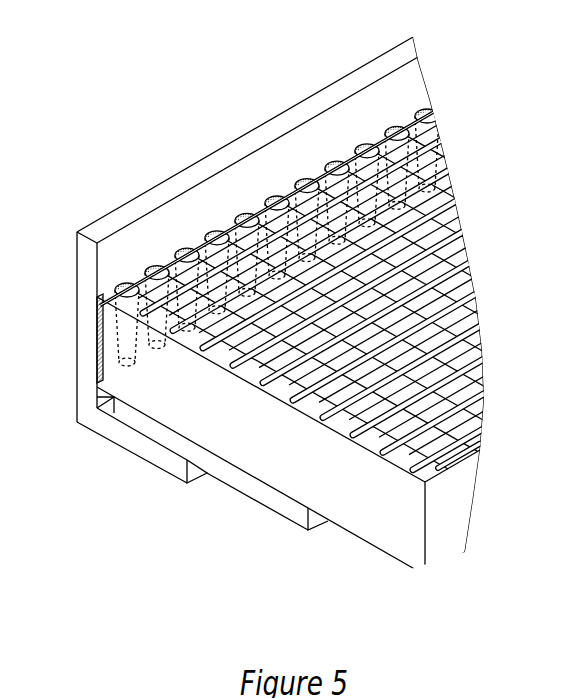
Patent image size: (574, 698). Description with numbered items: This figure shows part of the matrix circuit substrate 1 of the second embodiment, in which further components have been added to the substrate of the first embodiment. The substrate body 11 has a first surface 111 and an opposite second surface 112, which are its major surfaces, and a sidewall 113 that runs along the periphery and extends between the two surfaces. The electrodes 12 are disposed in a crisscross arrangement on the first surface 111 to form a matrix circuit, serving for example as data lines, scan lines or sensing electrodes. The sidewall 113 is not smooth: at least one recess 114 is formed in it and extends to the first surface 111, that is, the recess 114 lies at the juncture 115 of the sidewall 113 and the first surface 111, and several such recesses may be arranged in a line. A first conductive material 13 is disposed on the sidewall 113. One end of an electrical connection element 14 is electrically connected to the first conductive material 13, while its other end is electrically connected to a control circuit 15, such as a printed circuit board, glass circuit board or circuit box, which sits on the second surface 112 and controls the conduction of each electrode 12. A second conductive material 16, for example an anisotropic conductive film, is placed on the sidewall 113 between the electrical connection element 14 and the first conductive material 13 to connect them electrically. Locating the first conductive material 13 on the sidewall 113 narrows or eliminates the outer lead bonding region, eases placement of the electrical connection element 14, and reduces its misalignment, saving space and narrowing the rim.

The matrix circuit substrate 1 is at (158, 86).
The substrate body 11 is at (375, 517).
The first surface 111 is at (452, 463).
The second surface 112 is at (398, 562).
The sidewall 113 is at (97, 384).
The recess 114 is at (428, 126).
The juncture 115 is at (160, 250).
The electrode 12 is at (462, 260).
The first conductive material 13 is at (115, 285).
The electrical connection element 14 is at (308, 117).
The control circuit 15 is at (270, 498).
The second conductive material 16 is at (97, 335).